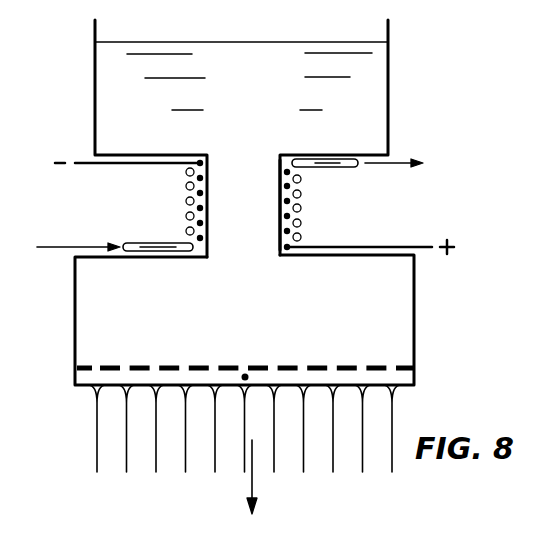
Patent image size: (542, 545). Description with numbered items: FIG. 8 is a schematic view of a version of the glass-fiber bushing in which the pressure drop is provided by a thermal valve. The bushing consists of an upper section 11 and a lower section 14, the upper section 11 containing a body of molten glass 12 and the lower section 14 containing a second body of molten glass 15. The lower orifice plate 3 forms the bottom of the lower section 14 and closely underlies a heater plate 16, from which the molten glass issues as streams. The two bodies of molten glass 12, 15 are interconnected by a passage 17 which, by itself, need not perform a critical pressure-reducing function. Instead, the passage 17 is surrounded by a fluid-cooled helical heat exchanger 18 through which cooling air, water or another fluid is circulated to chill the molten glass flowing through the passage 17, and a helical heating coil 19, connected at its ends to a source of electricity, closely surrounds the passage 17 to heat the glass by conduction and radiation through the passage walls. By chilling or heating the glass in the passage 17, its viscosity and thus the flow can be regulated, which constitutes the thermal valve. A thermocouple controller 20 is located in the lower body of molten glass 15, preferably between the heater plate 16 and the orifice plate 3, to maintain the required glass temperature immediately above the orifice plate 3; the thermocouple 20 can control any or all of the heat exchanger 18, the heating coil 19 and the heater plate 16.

The lower orifice plate 3 is at (75, 387).
The upper section 11 is at (388, 68).
The body of molten glass 12 is at (262, 98).
The lower section 14 is at (415, 293).
The body of molten glass 15 is at (262, 322).
The heater plate 16 is at (352, 366).
The passage 17 is at (280, 180).
The fluid-cooled helical heat exchanger 18 is at (186, 185).
The helical heating coil 19 is at (288, 216).
The thermocouple controller 20 is at (245, 373).